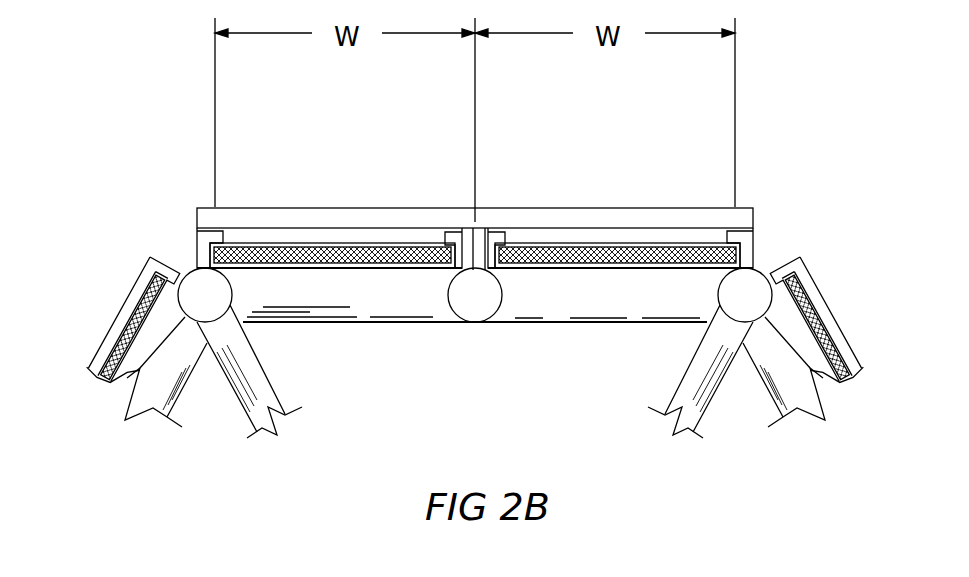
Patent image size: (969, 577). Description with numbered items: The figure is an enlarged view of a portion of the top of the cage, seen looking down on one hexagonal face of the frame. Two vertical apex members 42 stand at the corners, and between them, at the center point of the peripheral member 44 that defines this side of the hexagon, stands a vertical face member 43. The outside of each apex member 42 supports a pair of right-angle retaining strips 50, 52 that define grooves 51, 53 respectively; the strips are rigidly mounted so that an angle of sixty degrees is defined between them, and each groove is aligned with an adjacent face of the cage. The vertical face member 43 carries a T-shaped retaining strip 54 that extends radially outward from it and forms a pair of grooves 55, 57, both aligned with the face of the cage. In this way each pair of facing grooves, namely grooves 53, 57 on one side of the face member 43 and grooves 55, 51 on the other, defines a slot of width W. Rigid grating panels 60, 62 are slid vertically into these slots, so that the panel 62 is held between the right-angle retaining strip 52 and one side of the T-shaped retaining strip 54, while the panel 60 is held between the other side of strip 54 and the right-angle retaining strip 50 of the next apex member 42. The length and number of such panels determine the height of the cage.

The vertical apex member 42 is at (207, 305).
The vertical face member 43 is at (470, 307).
The peripheral member 44 is at (560, 310).
The right-angle retaining strip 50 is at (138, 265).
The groove 51 is at (723, 243).
The right-angle retaining strip 52 is at (198, 237).
The groove 53 is at (227, 243).
The T-shaped retaining strip 54 is at (483, 228).
The groove 55 is at (505, 240).
The groove 57 is at (445, 240).
The grating panel 60 is at (603, 245).
The grating panel 62 is at (305, 245).